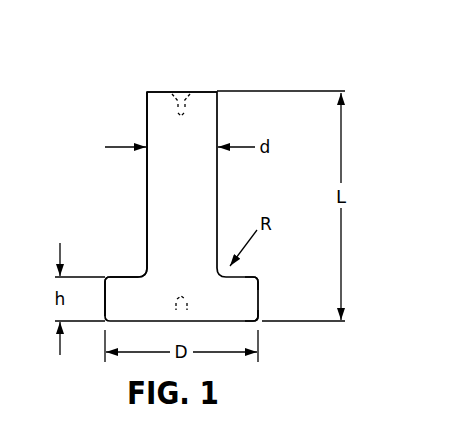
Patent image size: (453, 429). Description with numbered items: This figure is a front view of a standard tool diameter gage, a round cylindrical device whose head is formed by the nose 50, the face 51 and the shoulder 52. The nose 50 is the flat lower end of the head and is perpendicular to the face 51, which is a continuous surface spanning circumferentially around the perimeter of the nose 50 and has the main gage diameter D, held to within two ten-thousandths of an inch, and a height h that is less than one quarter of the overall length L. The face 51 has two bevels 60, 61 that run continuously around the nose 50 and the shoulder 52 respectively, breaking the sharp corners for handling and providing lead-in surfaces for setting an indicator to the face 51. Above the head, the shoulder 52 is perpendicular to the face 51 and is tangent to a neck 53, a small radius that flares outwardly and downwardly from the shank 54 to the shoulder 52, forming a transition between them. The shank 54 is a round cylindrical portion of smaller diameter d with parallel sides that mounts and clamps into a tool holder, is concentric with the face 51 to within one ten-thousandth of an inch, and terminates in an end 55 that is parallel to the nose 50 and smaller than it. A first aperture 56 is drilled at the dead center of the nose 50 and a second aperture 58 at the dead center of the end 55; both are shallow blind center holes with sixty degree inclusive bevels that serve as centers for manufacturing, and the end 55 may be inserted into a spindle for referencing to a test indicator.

The nose 50 is at (139, 323).
The face 51 is at (104, 295).
The shoulder 52 is at (118, 277).
The neck 53 is at (138, 276).
The shank 54 is at (146, 130).
The end 55 is at (207, 92).
The first aperture 56 is at (183, 321).
The second aperture 58 is at (181, 92).
The bevel 60 is at (261, 323).
The bevel 61 is at (261, 275).